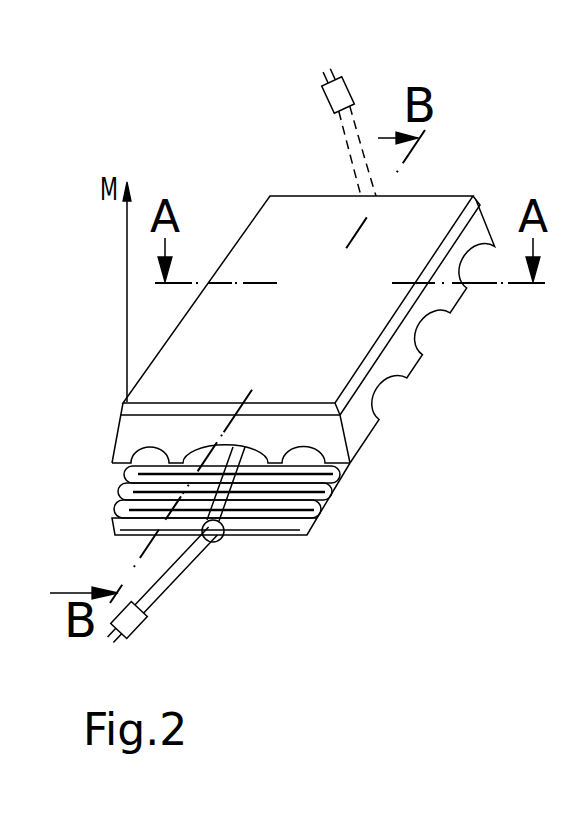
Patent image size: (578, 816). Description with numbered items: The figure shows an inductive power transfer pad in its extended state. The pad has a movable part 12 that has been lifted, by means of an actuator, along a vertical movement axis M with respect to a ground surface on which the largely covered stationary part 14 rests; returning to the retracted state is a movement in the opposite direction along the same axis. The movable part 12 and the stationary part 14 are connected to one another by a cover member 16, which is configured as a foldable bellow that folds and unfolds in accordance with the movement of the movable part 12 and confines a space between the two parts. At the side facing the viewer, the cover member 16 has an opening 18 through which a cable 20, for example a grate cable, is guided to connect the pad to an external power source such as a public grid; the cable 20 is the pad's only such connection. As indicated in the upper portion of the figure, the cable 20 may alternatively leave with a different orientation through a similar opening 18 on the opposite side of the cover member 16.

The movable part 12 is at (486, 213).
The stationary part 14 is at (120, 533).
The cover member 16 is at (117, 492).
The opening 18 is at (217, 546).
The cable 20 is at (368, 78).